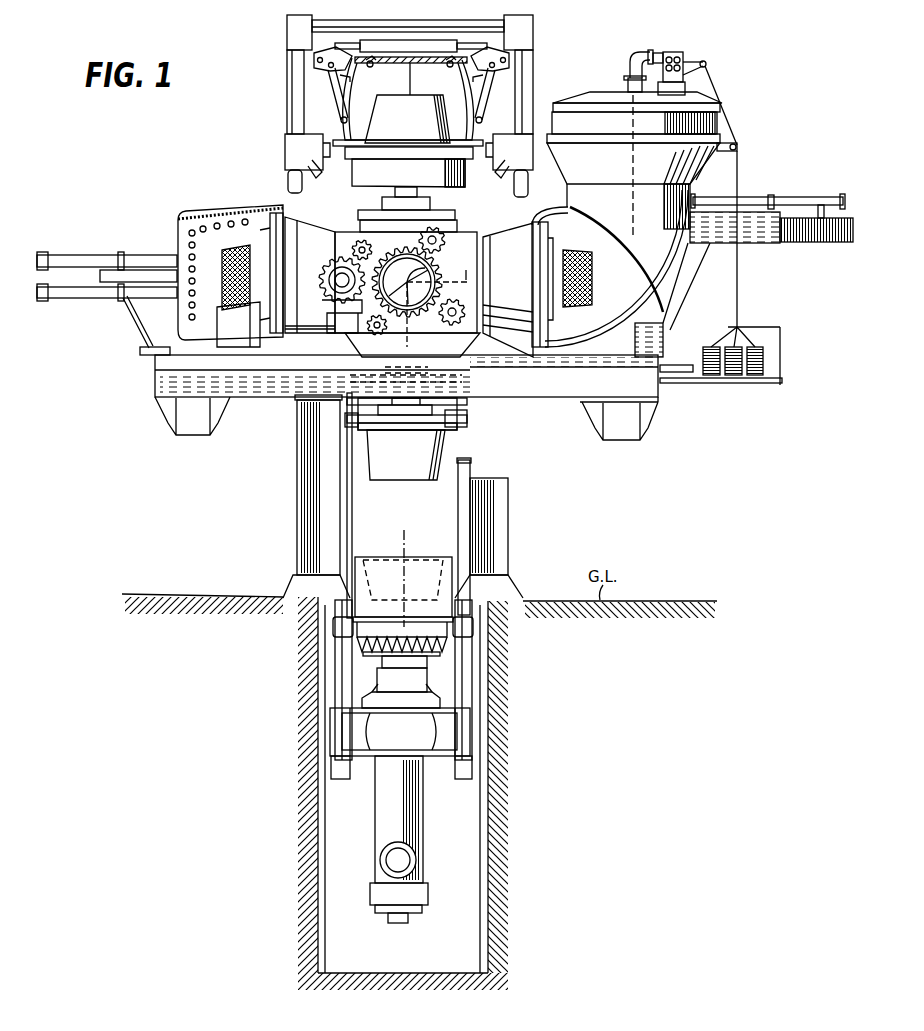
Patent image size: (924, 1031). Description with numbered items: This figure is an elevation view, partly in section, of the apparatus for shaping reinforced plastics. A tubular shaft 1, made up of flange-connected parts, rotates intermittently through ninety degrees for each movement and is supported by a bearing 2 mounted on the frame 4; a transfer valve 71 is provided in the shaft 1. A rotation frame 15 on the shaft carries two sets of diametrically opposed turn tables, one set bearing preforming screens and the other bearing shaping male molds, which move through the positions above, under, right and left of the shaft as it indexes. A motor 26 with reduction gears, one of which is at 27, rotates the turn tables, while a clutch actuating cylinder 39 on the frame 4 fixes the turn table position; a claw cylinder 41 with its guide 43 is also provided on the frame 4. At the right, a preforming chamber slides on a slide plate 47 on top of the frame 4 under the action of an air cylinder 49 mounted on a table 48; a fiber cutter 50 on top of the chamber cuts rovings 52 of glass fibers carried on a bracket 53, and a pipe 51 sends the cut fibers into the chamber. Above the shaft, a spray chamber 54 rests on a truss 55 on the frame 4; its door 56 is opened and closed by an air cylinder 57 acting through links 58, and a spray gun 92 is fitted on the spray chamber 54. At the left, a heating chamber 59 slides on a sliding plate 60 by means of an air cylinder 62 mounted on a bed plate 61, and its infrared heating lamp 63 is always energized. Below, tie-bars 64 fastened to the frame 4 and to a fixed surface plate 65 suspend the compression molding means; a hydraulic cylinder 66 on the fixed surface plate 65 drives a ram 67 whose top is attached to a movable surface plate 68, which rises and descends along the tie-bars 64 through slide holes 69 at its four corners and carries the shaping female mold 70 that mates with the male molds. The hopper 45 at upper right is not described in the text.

The tubular shaft 1 is at (464, 265).
The bearing 2 is at (627, 243).
The frame 4 is at (165, 385).
The rotation frame 15 is at (362, 226).
The motor 26 is at (342, 287).
The reduction gear 27 is at (300, 300).
The clutch actuating cylinder 39 is at (347, 427).
The claw cylinder 41 is at (395, 415).
The guide 43 is at (405, 422).
The hopper vessel 45 is at (705, 125).
The slide plate 47 is at (690, 372).
The table 48 is at (805, 242).
The air cylinder 49 is at (803, 197).
The fiber cutter 50 is at (680, 52).
The pipe 51 is at (638, 52).
The rovings 52 is at (765, 365).
The bracket 53 is at (742, 385).
The spray chamber 54 is at (403, 70).
The truss 55 is at (287, 28).
The door 56 is at (344, 123).
The air cylinder 57 is at (372, 40).
The links 58 is at (320, 71).
The heating chamber 59 is at (237, 335).
The sliding plate 60 is at (165, 356).
The bed plate 61 is at (148, 322).
The air cylinder 62 is at (78, 256).
The infrared heating lamp 63 is at (190, 250).
The tie-bars 64 is at (338, 695).
The fixed surface plate 65 is at (420, 757).
The hydraulic cylinder 66 is at (412, 830).
The ram 67 is at (390, 655).
The movable surface plate 68 is at (430, 655).
The slide holes 69 is at (340, 625).
The shaping female mold 70 is at (445, 575).
The transfer valve 71 is at (412, 302).
The spray gun 92 is at (369, 60).